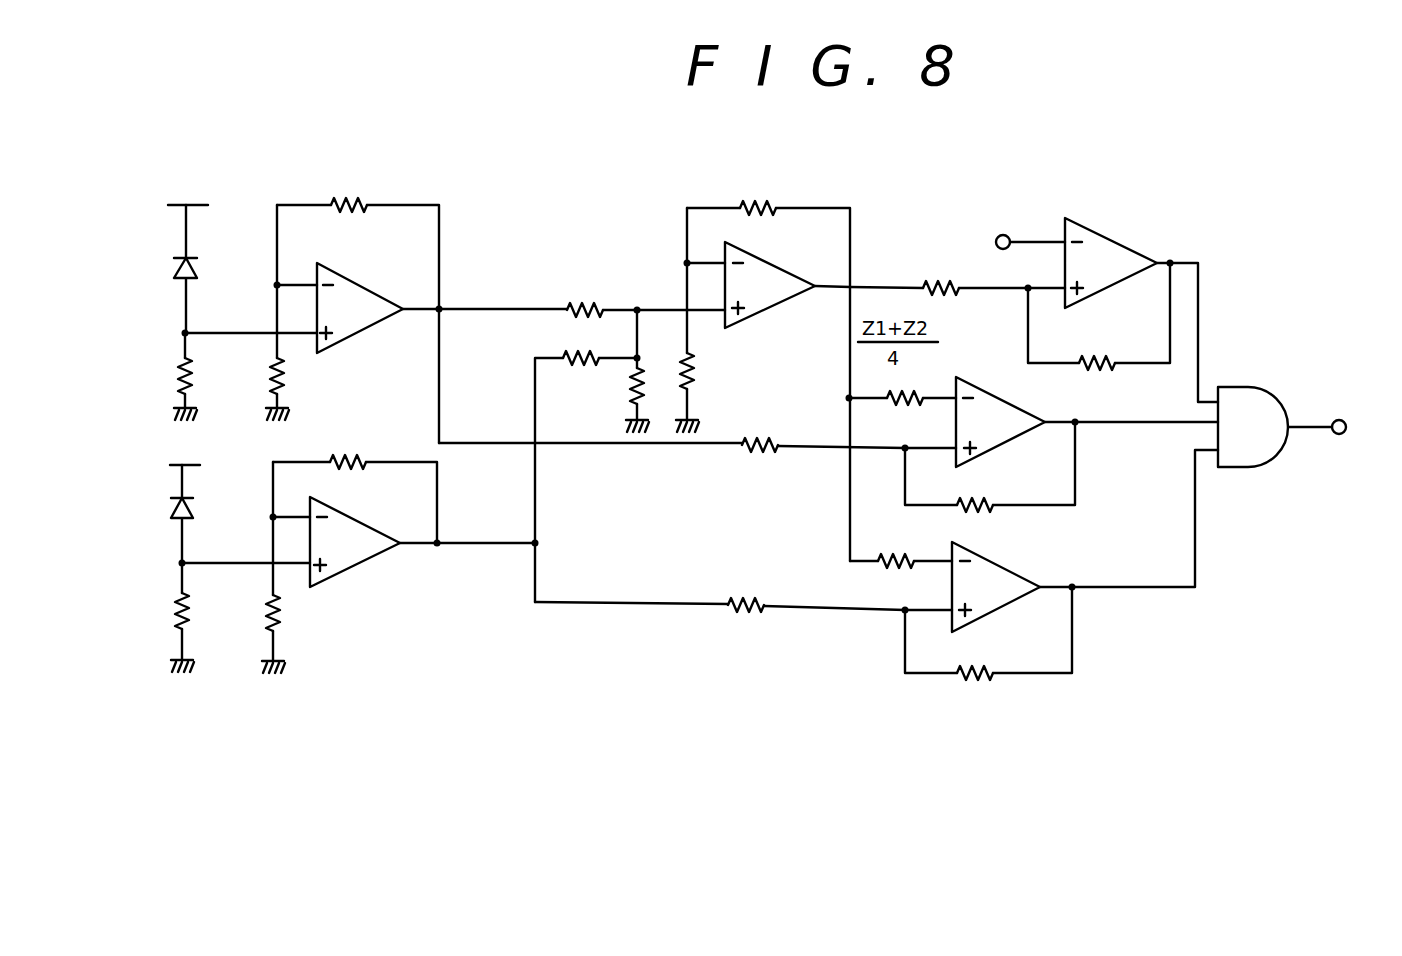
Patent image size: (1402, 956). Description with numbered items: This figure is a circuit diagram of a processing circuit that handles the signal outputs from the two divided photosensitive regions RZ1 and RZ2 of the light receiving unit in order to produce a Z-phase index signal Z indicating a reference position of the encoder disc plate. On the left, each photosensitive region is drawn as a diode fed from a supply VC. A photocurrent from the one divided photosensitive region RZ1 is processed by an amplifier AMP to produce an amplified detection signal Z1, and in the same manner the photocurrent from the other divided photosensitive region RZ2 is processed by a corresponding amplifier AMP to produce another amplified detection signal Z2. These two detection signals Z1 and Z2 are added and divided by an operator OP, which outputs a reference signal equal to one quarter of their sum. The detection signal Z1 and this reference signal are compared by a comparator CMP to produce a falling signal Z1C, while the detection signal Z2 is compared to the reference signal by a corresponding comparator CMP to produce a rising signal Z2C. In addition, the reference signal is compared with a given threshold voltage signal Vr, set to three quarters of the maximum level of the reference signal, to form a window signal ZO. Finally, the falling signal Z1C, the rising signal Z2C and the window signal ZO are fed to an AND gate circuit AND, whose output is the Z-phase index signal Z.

The divided photosensitive region RZ1 is at (149, 269).
The divided photosensitive region RZ2 is at (146, 514).
The supply voltage VC is at (186, 322).
The threshold voltage signal Vr is at (1011, 243).
The amplified detection signal Z1 is at (485, 298).
The amplified detection signal Z2 is at (467, 559).
The window signal ZO is at (1187, 321).
The falling signal Z1C is at (1131, 412).
The rising signal Z2C is at (1129, 521).
The Z-phase index signal Z is at (1327, 430).
The amplifier AMP is at (356, 425).
The operator OP is at (770, 285).
The comparator CMP is at (1054, 425).
The AND gate circuit AND is at (1253, 427).